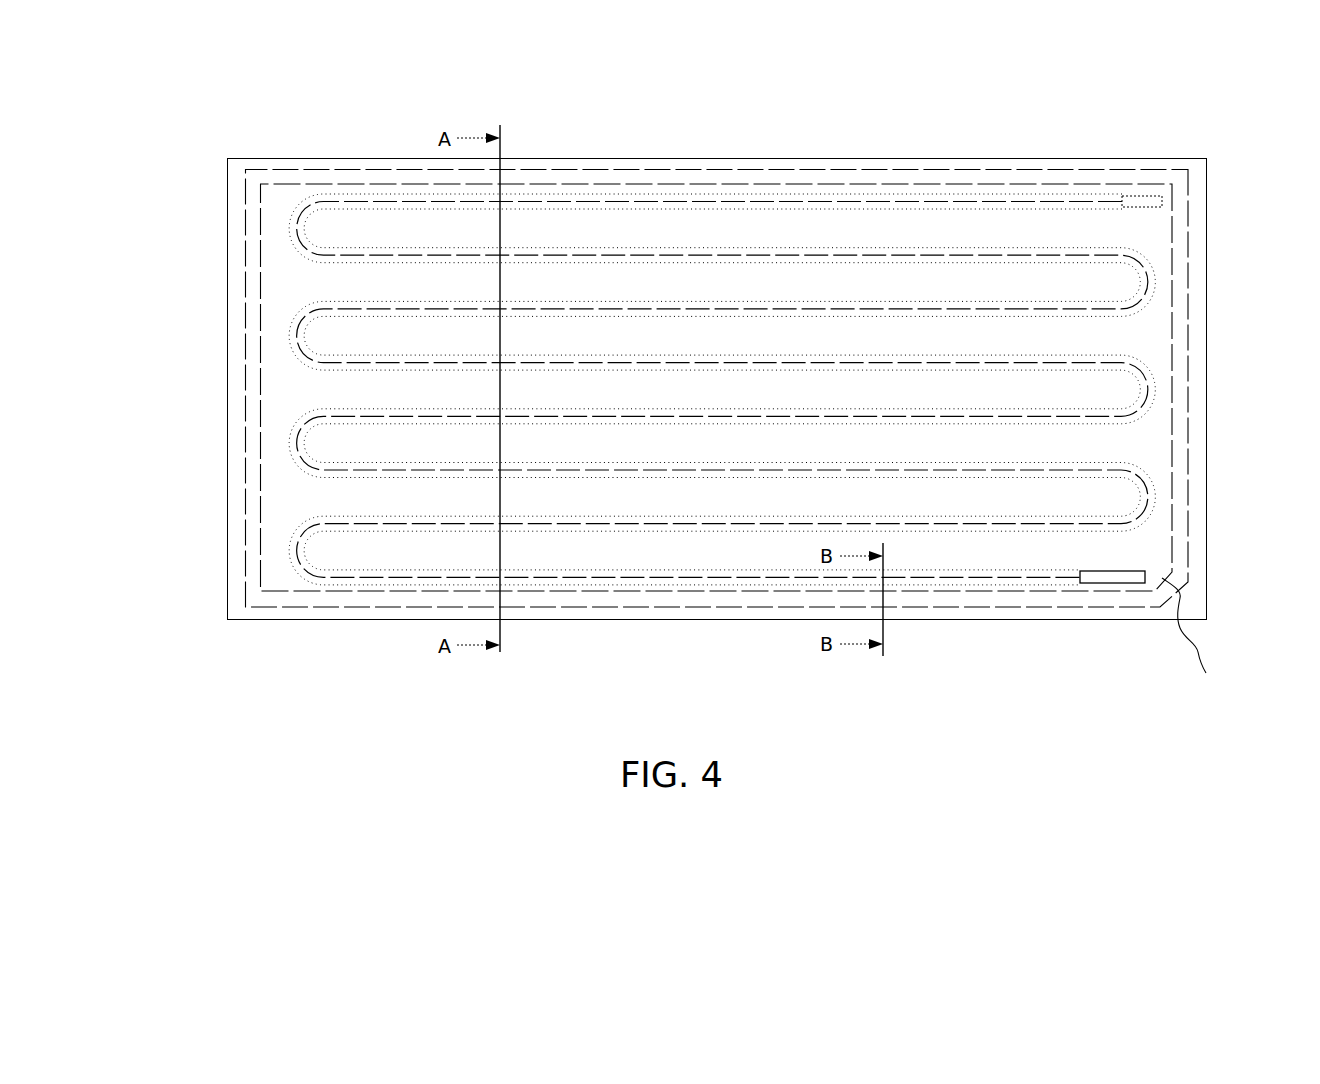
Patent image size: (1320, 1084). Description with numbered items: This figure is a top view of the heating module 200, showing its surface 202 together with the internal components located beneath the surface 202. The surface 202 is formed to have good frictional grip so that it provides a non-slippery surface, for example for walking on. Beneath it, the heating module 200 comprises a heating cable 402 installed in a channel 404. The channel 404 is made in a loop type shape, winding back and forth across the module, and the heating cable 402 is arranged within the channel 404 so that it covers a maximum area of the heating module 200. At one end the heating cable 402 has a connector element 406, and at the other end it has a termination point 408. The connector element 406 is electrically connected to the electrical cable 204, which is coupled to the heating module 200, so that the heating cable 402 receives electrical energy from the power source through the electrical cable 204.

The heating module 200 is at (849, 138).
The surface 202 is at (1058, 239).
The electrical cable 204 is at (1200, 672).
The heating cable 402 is at (297, 237).
The channel 404 is at (300, 248).
The connector element 406 is at (1118, 578).
The termination point 408 is at (1145, 203).